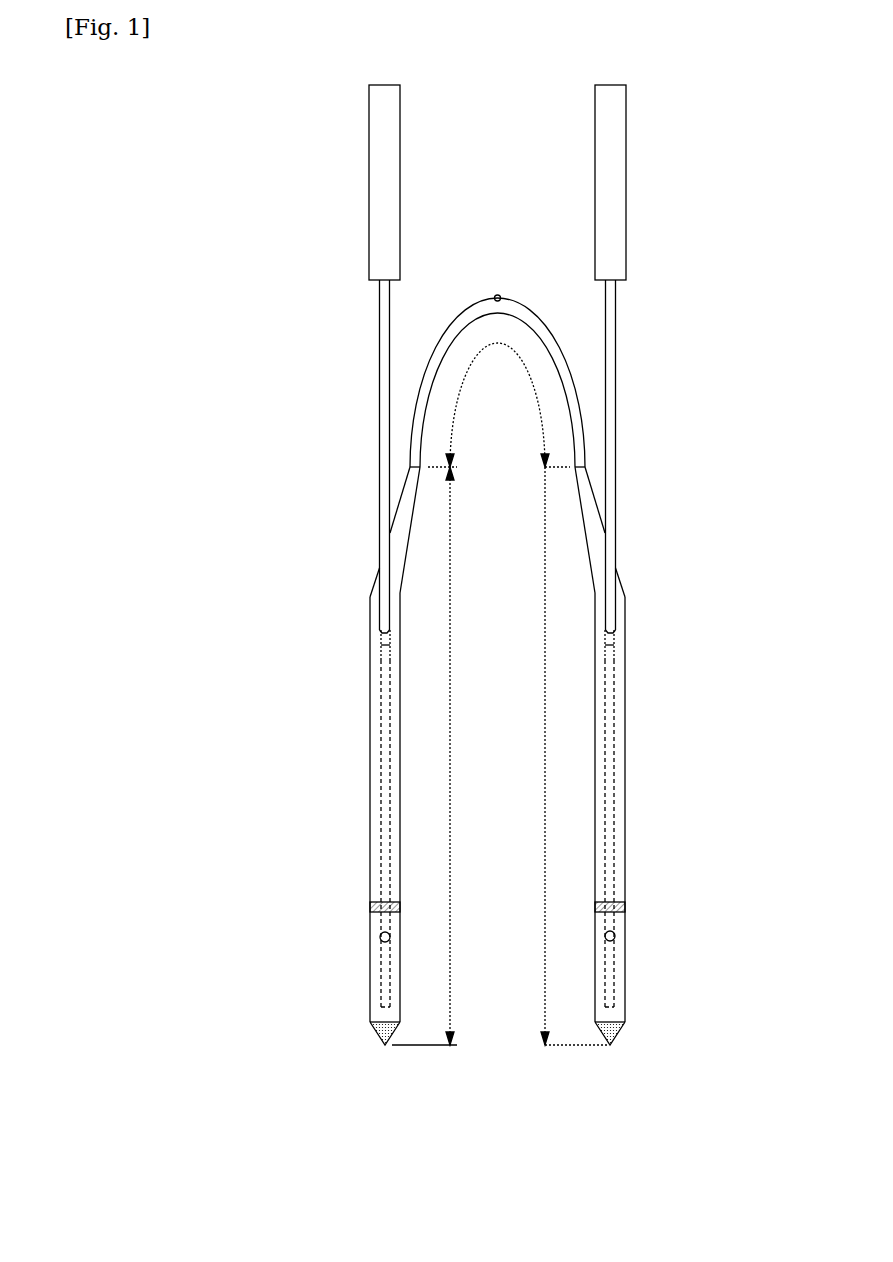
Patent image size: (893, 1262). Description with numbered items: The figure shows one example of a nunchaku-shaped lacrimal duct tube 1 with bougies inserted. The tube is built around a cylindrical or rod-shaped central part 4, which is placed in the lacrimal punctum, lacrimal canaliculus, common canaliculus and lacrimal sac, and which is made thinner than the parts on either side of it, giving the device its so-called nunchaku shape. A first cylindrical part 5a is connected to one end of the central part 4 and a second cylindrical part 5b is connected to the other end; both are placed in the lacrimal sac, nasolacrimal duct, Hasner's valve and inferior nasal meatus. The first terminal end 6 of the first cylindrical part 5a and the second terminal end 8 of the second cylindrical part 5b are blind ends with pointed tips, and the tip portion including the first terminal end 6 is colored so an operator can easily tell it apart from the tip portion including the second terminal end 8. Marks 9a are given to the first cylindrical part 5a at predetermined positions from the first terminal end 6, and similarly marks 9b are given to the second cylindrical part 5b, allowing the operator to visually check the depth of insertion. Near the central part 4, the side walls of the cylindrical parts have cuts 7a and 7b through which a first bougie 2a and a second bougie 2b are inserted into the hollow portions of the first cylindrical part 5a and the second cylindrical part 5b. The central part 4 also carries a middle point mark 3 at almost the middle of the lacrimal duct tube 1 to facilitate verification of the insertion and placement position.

The nunchaku-shaped lacrimal duct tube 1 is at (626, 794).
The first bougie 2a is at (378, 348).
The second bougie 2b is at (617, 345).
The middle point mark 3 is at (498, 295).
The central part 4 is at (416, 405).
The first cylindrical part 5a is at (371, 773).
The second cylindrical part 5b is at (625, 732).
The first terminal end 6 is at (385, 1048).
The cut 7a is at (385, 650).
The cut 7b is at (613, 648).
The second terminal end 8 is at (611, 1048).
The marks 9a is at (380, 937).
The marks 9b is at (615, 936).